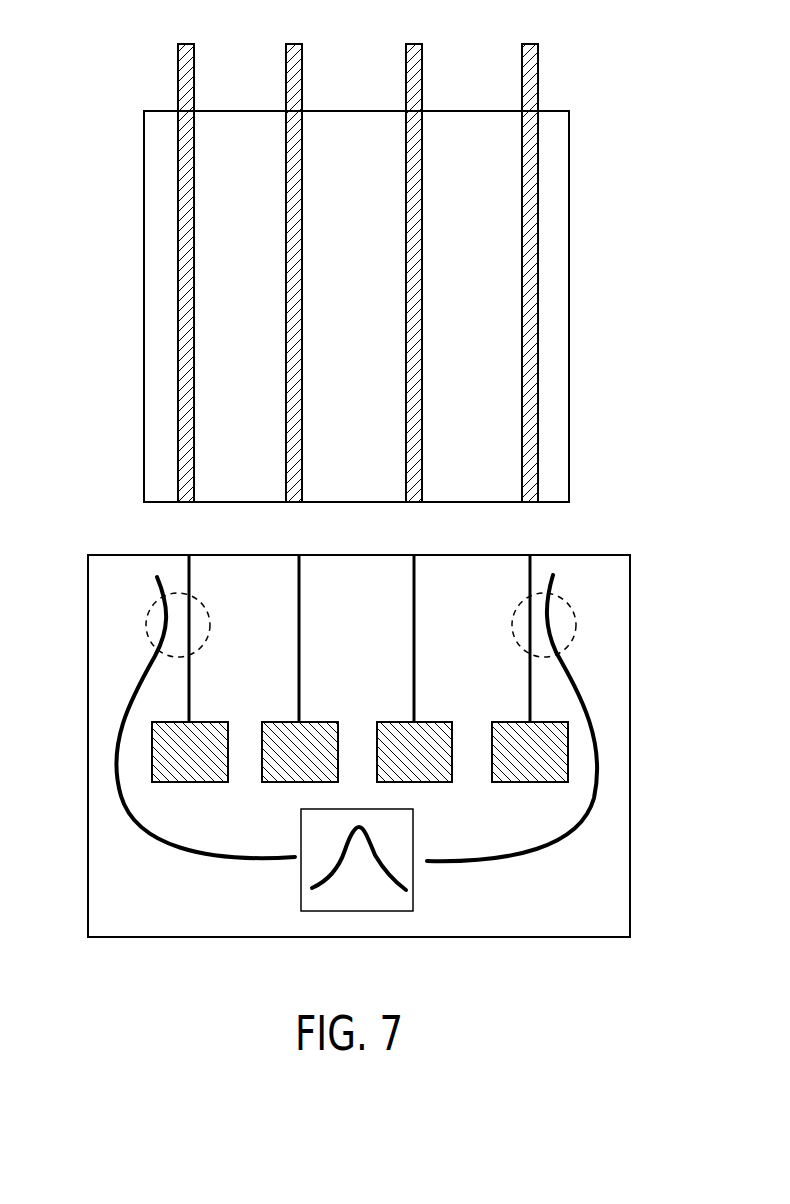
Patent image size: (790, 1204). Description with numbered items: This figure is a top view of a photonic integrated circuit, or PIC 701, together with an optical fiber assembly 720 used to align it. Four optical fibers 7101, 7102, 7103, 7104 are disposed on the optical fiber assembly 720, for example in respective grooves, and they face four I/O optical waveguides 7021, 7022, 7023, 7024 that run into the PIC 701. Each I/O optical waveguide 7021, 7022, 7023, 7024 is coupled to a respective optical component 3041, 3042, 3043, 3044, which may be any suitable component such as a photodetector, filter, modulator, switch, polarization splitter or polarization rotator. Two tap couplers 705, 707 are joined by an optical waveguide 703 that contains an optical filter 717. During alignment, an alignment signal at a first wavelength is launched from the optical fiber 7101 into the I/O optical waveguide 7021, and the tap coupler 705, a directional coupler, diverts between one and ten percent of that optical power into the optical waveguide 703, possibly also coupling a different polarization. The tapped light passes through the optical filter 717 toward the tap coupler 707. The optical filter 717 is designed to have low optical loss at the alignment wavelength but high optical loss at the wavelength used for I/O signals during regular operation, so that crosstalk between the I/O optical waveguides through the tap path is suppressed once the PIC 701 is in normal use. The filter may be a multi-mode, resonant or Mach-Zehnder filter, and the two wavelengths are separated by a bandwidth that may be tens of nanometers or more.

The optical fiber 7101 is at (177, 47).
The optical fiber 7102 is at (285, 51).
The optical fiber 7103 is at (405, 52).
The optical fiber 7104 is at (521, 52).
The optical fiber assembly 720 is at (569, 304).
The PIC 701 is at (630, 851).
The I/O optical waveguide 7021 is at (191, 686).
The I/O optical waveguide 7022 is at (297, 598).
The I/O optical waveguide 7023 is at (412, 609).
The I/O optical waveguide 7024 is at (528, 691).
The optical component 3041 is at (195, 783).
The optical component 3042 is at (272, 783).
The optical component 3043 is at (440, 783).
The optical component 3044 is at (533, 783).
The optical waveguide 703 is at (192, 862).
The tap coupler 705 is at (150, 636).
The tap coupler 707 is at (570, 604).
The optical filter 717 is at (369, 870).